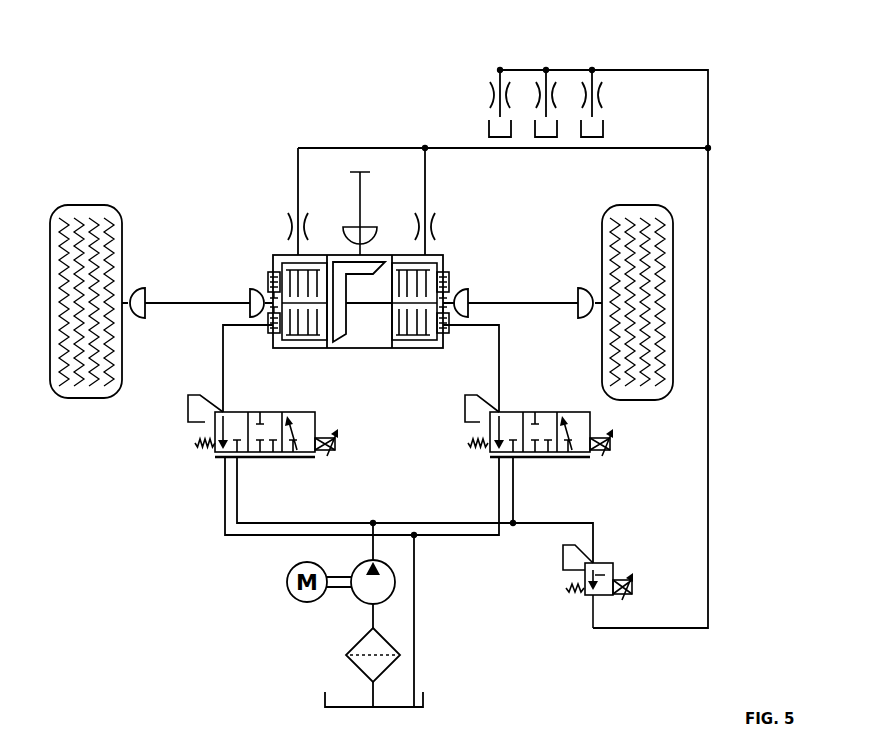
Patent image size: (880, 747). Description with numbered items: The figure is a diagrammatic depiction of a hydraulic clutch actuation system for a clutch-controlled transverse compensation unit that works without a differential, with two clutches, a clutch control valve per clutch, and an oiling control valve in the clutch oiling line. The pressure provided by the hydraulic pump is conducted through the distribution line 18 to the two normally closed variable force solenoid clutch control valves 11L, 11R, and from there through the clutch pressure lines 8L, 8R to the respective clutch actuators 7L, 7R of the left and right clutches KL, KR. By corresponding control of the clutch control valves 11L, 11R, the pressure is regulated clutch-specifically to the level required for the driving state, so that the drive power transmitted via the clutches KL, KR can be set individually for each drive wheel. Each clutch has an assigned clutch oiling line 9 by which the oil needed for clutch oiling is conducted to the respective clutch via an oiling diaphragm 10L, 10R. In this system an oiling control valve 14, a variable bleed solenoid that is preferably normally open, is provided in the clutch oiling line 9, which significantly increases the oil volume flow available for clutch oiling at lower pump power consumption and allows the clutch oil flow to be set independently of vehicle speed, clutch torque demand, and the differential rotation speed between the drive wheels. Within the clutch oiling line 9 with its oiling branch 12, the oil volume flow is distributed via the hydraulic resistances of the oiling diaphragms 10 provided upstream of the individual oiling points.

The clutch actuator 7L is at (266, 275).
The clutch actuator 7R is at (453, 273).
The clutch pressure line 8L is at (222, 342).
The clutch pressure line 8R is at (500, 345).
The clutch oiling line 9 is at (708, 448).
The oiling diaphragm 10 is at (492, 93).
The oiling diaphragm 10L is at (292, 226).
The oiling diaphragm 10R is at (430, 228).
The clutch control valve 11L is at (200, 480).
The clutch control valve 11R is at (612, 475).
The oiling branch 12 is at (710, 100).
The oiling control valve 14 is at (562, 609).
The distribution line 18 is at (433, 524).
The clutch KL is at (240, 263).
The clutch KR is at (486, 264).